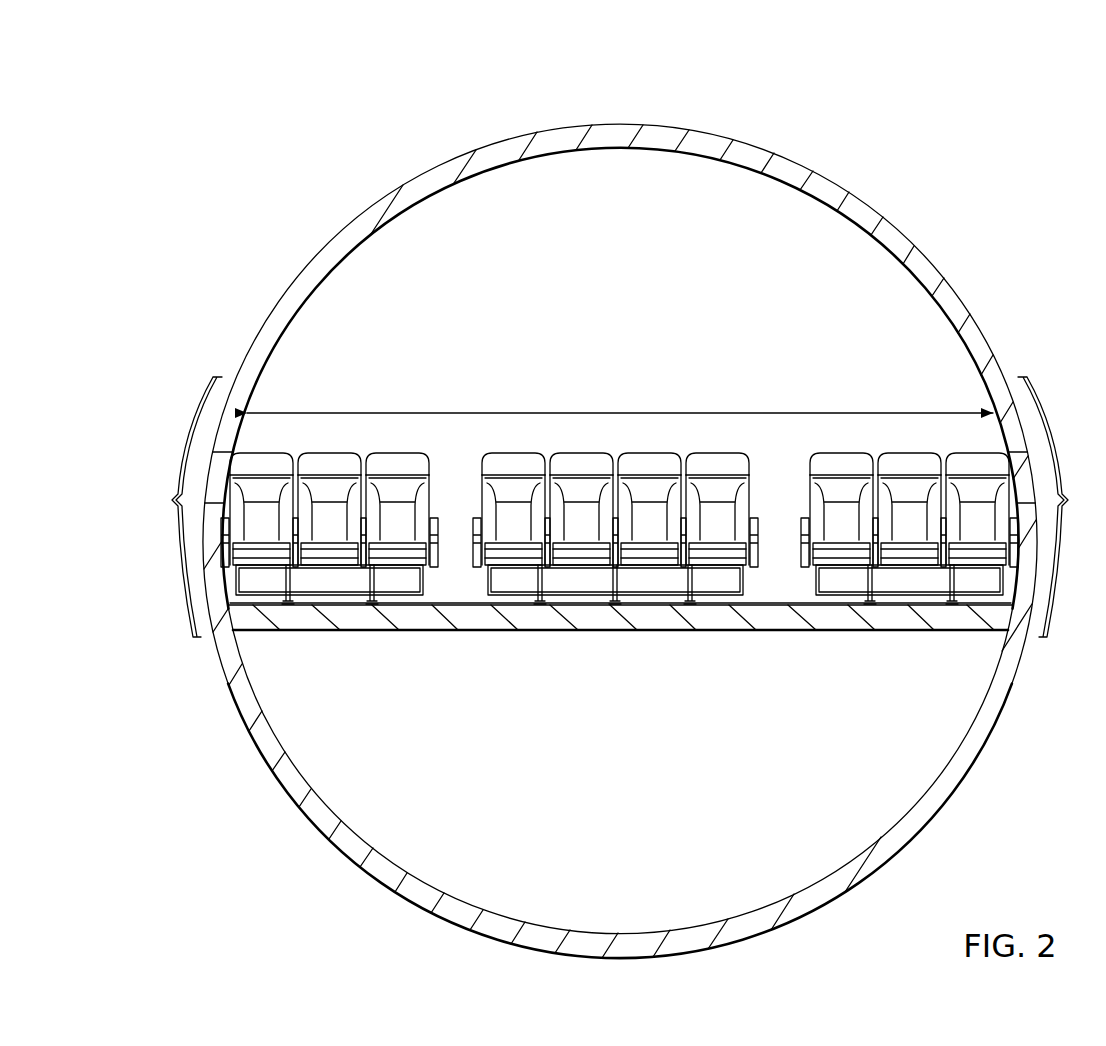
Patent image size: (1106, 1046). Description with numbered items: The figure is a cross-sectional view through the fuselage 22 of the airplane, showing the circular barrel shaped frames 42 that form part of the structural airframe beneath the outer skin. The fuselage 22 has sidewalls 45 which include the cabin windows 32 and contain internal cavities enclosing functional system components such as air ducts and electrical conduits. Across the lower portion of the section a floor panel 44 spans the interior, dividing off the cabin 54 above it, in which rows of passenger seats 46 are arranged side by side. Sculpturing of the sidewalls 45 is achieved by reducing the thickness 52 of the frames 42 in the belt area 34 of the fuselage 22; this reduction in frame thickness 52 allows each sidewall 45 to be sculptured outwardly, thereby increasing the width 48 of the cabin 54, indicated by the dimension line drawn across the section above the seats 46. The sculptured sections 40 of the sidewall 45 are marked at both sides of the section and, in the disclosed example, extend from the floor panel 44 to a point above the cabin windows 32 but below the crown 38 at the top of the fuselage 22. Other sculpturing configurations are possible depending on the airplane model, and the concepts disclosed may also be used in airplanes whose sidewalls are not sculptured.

The fuselage 22 is at (865, 889).
The cabin windows 32 is at (226, 465).
The belt area 34 is at (996, 201).
The crown 38 is at (543, 100).
The sculptured sections 40 is at (618, 507).
The frames 42 is at (730, 930).
The floor panel 44 is at (654, 622).
The sidewalls 45 is at (841, 225).
The passenger seats 46 is at (431, 463).
The width 48 is at (623, 411).
The thickness 52 is at (350, 188).
The cabin 54 is at (607, 259).